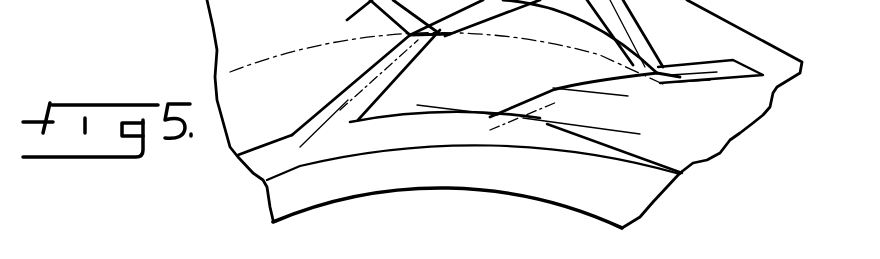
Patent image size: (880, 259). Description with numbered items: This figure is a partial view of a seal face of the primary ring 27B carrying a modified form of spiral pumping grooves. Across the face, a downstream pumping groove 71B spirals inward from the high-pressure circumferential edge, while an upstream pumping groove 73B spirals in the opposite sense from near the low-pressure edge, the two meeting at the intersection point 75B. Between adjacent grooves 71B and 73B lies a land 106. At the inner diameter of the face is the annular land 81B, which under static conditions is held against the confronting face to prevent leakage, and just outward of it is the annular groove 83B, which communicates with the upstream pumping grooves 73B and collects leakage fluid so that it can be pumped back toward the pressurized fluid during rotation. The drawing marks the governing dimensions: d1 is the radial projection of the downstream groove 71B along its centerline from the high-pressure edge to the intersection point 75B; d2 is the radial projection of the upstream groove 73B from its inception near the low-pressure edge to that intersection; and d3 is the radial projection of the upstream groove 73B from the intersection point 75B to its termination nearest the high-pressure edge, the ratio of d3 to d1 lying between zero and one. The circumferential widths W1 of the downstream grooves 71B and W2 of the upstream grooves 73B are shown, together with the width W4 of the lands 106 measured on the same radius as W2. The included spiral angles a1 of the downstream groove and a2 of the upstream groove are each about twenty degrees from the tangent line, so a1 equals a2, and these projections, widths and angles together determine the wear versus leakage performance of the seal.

The downstream pumping groove 71B is at (240, 28).
The ring 27B is at (733, 13).
The upstream pumping groove 73B is at (458, 88).
The intersection point 75B is at (447, 34).
The annular land 81B is at (282, 196).
The annular groove 83B is at (658, 178).
The land 106 is at (560, 98).
The radial projection of downstream pumping groove d1 is at (273, 140).
The radial projection of upstream pumping groove d2 is at (262, 105).
The radial projection of upstream groove beyond intersection d3 is at (550, 6).
The circumferential width of downstream pumping grooves W1 is at (330, 17).
The circumferential width of upstream pumping grooves W2 is at (355, 93).
The circumferential width of lands W4 is at (357, 87).
The included angle of downstream pumping groove a1 is at (613, 90).
The included angle of upstream pumping groove a2 is at (663, 0).